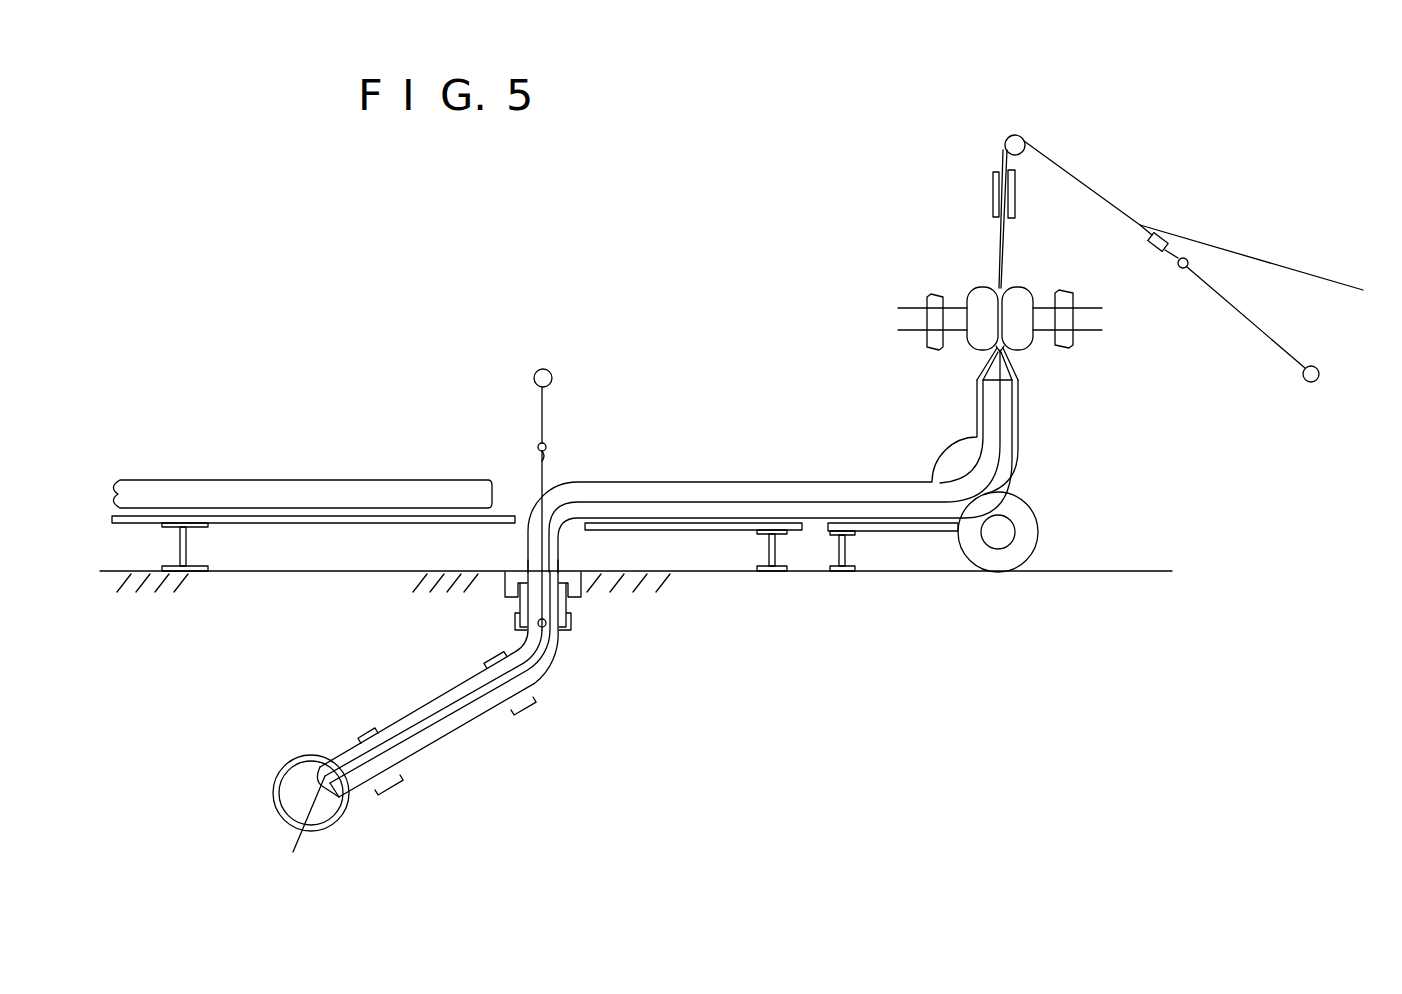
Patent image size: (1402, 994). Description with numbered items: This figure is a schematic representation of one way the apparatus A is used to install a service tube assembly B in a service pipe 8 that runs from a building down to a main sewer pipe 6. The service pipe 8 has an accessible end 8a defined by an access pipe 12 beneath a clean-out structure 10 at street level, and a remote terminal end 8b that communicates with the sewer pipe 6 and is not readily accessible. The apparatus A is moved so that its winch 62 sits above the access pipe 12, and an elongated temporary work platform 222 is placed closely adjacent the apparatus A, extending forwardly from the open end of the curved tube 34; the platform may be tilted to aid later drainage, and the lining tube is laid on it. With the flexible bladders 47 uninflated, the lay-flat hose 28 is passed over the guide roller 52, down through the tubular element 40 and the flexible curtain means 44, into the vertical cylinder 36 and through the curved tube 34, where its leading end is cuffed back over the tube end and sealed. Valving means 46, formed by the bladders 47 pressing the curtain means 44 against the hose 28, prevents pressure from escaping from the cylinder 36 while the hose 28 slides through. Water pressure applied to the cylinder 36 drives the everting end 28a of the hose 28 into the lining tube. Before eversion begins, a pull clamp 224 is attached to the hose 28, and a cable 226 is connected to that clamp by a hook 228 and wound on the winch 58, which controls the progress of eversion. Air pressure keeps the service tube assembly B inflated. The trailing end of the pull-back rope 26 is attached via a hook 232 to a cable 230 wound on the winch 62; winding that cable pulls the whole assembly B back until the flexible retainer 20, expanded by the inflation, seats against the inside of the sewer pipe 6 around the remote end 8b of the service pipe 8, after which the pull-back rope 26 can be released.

The main sewer pipe 6 is at (284, 768).
The service pipe 8 is at (490, 706).
The accessible end 8a is at (561, 568).
The remote terminal end 8b is at (322, 772).
The clean-out structure 10 is at (583, 588).
The access pipe 12 is at (512, 603).
The flexible retainer 20 is at (336, 804).
The pull-back rope 26 is at (547, 484).
The everted flexible tubular conduit 28 is at (1105, 192).
The everting end 28a is at (298, 832).
The curved tube 34 is at (1000, 484).
The vertical cylinder 36 is at (1022, 418).
The tubular element 40 is at (1013, 197).
The curtain means 44 is at (1004, 246).
The valving means 46 is at (1030, 360).
The flexible bladders 47 is at (981, 286).
The guide roller 52 is at (1016, 134).
The winch 58 is at (1313, 385).
The winch 62 is at (541, 370).
The temporary work platform 222 is at (300, 528).
The pull clamp 224 is at (1158, 254).
The cable 226 is at (1257, 322).
The hook 228 is at (1182, 258).
The cable 230 is at (546, 414).
The hook 232 is at (548, 456).
The apparatus A is at (966, 216).
The service tube assembly B is at (294, 466).